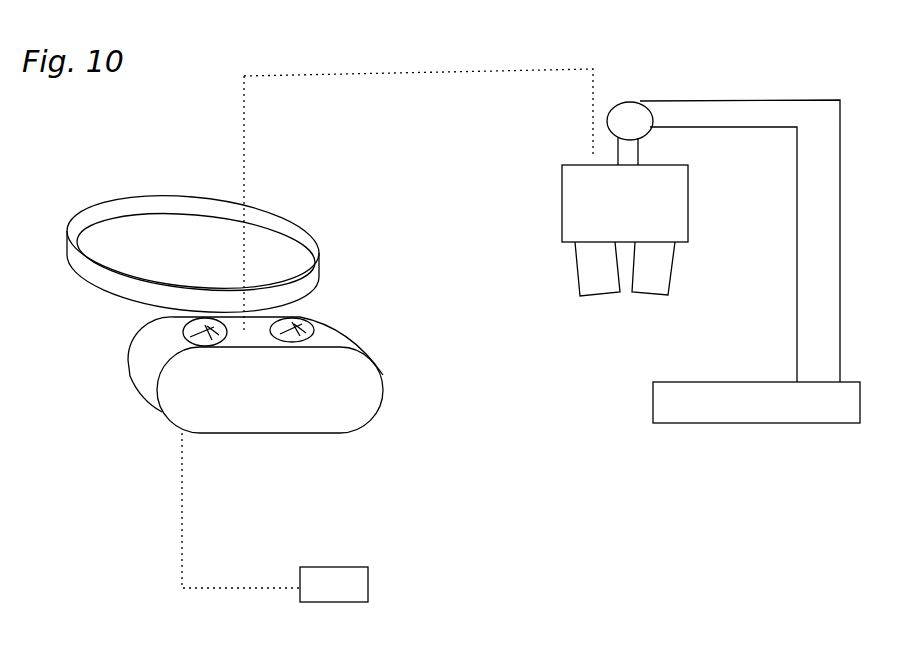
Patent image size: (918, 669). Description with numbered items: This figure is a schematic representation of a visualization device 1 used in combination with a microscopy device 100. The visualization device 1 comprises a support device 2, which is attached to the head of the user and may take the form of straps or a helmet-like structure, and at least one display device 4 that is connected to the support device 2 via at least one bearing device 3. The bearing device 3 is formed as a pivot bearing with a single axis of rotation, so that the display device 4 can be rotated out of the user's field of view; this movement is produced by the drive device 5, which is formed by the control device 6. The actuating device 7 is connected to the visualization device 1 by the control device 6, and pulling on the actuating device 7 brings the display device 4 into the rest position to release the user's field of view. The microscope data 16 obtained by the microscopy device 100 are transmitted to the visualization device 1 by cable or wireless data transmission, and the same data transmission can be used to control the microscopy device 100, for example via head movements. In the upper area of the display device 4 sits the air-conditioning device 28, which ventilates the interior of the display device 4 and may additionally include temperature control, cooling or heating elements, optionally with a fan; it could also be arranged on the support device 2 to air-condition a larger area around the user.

The visualization device 1 is at (237, 316).
The support device 2 is at (85, 263).
The bearing device 3 is at (237, 316).
The drive device 5 is at (248, 332).
The air-conditioning device 28 is at (183, 335).
The display device 4 is at (320, 395).
The control device 6 is at (215, 587).
The actuating device 7 is at (357, 582).
The microscope data 16 is at (383, 72).
The microscopy device 100 is at (607, 378).